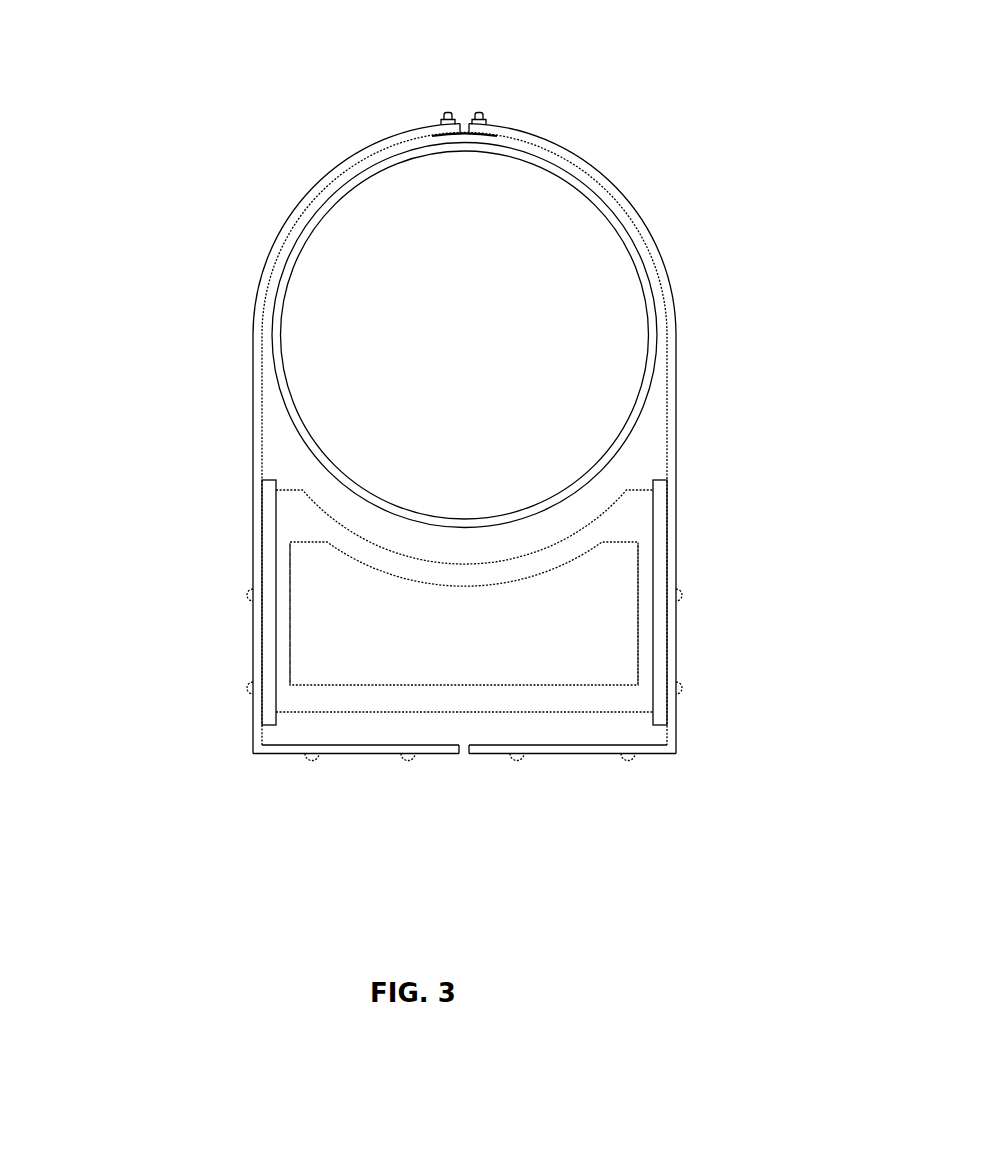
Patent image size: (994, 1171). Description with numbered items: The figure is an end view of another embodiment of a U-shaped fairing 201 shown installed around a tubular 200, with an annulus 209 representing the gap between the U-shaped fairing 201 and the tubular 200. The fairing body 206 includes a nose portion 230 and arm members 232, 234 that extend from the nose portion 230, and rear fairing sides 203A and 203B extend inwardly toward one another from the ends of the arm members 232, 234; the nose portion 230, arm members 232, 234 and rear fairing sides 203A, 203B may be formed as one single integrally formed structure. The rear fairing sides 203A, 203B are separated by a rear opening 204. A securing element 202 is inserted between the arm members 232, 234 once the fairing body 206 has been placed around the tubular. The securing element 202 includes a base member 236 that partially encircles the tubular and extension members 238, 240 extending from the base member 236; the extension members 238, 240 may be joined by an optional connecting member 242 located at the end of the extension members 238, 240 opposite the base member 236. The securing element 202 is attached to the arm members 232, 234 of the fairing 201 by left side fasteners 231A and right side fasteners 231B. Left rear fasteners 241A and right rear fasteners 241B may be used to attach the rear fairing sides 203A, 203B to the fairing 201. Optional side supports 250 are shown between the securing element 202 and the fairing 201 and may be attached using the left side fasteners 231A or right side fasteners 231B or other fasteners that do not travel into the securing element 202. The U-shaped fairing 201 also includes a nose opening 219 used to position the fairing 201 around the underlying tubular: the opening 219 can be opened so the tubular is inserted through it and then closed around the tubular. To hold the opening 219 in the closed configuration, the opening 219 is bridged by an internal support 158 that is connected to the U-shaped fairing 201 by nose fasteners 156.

The nose fasteners 156 is at (443, 113).
The internal support 158 is at (483, 132).
The tubular 200 is at (657, 365).
The U-shaped fairing 201 is at (249, 334).
The securing element 202 is at (285, 571).
The rear fairing side 203A is at (267, 757).
The rear fairing side 203B is at (662, 758).
The rear opening 204 is at (466, 758).
The fairing body 206 is at (670, 272).
The annulus 209 is at (338, 183).
The nose opening 219 is at (463, 118).
The nose portion 230 is at (622, 185).
The left side fasteners 231A is at (242, 687).
The right side fasteners 231B is at (688, 688).
The arm member 232 is at (680, 435).
The arm member 234 is at (250, 385).
The base member 236 is at (403, 557).
The extension member 238 is at (636, 657).
The extension member 240 is at (292, 662).
The left rear fasteners 241A is at (408, 761).
The right rear fasteners 241B is at (518, 761).
The connecting member 242 is at (461, 688).
The side supports 250 is at (268, 494).